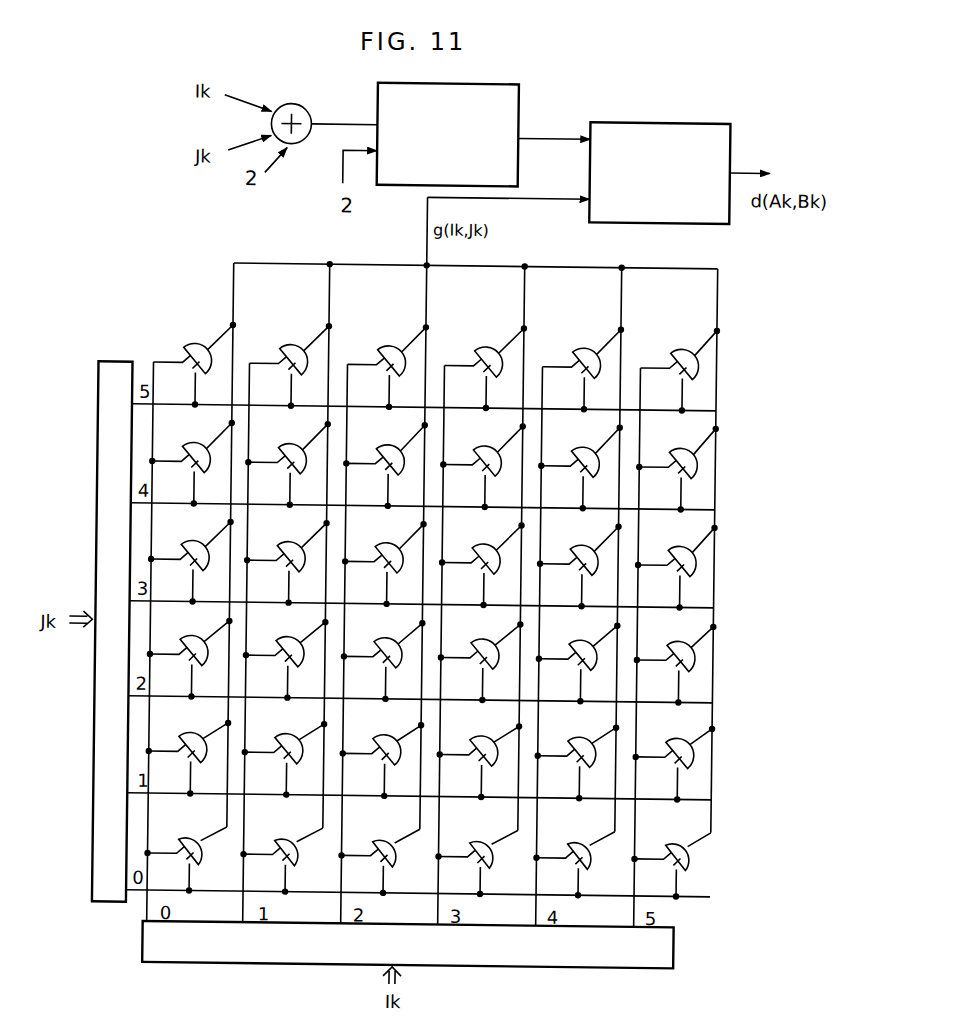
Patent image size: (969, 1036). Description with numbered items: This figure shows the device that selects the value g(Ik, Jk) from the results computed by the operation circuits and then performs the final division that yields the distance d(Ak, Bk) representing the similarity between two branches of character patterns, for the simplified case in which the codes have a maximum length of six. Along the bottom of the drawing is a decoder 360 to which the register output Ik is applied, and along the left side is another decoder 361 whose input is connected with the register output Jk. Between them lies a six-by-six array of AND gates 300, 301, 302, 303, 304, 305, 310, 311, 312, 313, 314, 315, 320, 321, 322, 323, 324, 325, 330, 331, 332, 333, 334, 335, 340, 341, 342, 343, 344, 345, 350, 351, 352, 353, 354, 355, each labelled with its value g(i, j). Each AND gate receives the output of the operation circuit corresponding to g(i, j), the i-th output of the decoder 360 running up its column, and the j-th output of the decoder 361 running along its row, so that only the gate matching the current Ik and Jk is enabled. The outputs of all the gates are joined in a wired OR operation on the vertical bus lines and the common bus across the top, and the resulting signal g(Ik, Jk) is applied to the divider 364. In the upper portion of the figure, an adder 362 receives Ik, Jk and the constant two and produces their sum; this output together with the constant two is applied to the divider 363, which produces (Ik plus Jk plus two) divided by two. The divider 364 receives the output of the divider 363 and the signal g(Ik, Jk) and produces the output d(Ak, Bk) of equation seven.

The AND gate 300 is at (187, 860).
The AND gate 301 is at (188, 758).
The AND gate 302 is at (189, 658).
The AND gate 303 is at (190, 561).
The AND gate 304 is at (192, 463).
The AND gate 305 is at (194, 364).
The AND gate 310 is at (284, 861).
The AND gate 311 is at (284, 759).
The AND gate 312 is at (285, 659).
The AND gate 313 is at (286, 562).
The AND gate 314 is at (288, 464).
The AND gate 315 is at (290, 365).
The AND gate 320 is at (382, 862).
The AND gate 321 is at (381, 760).
The AND gate 322 is at (382, 660).
The AND gate 323 is at (383, 563).
The AND gate 324 is at (385, 465).
The AND gate 325 is at (388, 366).
The AND gate 330 is at (478, 863).
The AND gate 331 is at (479, 761).
The AND gate 332 is at (480, 661).
The AND gate 333 is at (481, 564).
The AND gate 334 is at (483, 466).
The AND gate 335 is at (485, 367).
The AND gate 340 is at (576, 865).
The AND gate 341 is at (576, 762).
The AND gate 342 is at (577, 662).
The AND gate 343 is at (578, 566).
The AND gate 344 is at (580, 468).
The AND gate 345 is at (583, 369).
The AND gate 350 is at (671, 871).
The AND gate 351 is at (674, 764).
The AND gate 352 is at (675, 664).
The AND gate 353 is at (676, 567).
The AND gate 354 is at (678, 469).
The AND gate 355 is at (681, 370).
The decoder 360 is at (408, 961).
The decoder 361 is at (88, 631).
The adder 362 is at (322, 110).
The divider 363 is at (514, 121).
The divider 364 is at (694, 219).